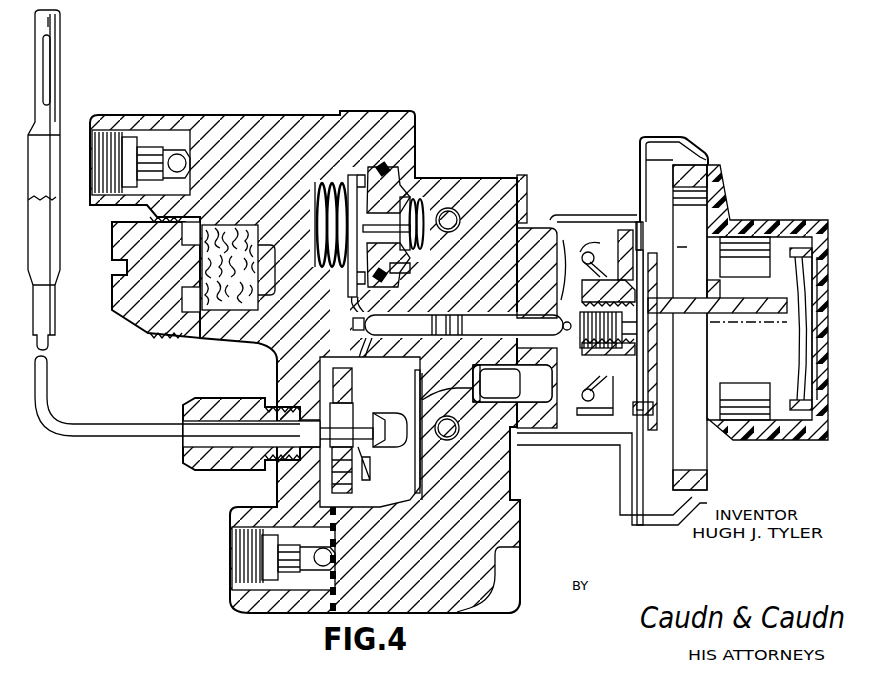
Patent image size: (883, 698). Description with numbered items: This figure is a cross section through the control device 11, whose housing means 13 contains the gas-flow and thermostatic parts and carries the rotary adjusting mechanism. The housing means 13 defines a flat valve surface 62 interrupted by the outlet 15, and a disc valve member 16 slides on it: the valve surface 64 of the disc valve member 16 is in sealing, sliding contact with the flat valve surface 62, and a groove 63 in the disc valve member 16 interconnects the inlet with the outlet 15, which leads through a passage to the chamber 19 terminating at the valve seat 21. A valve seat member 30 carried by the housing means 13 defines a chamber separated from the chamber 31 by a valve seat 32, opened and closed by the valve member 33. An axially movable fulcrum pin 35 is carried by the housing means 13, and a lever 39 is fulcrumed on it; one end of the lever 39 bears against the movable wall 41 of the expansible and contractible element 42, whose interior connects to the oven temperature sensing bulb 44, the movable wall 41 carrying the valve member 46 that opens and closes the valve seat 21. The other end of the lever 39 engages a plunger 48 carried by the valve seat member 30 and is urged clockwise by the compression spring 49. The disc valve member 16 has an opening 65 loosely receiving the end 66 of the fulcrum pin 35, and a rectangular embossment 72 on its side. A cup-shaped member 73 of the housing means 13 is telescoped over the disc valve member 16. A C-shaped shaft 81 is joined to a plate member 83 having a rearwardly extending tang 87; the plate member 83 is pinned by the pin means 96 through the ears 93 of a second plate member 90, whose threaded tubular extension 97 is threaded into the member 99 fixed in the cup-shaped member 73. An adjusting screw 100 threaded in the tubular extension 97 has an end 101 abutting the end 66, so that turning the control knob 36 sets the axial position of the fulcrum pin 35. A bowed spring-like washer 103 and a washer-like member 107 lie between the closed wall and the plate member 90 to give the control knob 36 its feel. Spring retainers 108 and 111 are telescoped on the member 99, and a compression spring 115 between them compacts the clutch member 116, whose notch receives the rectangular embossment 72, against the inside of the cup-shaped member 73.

The control device 11 is at (428, 311).
The housing means 13 is at (517, 501).
The outlet 15 is at (513, 410).
The disc valve member 16 is at (557, 221).
The chamber 19 is at (350, 347).
The valve seat 21 is at (408, 487).
The valve seat member 30 is at (405, 203).
The chamber 31 is at (413, 263).
The valve seat 32 is at (424, 240).
The valve member 33 is at (455, 207).
The fulcrum pin 35 is at (423, 335).
The control knob 36 is at (790, 223).
The lever 39 is at (347, 302).
The movable wall 41 is at (365, 428).
The expansible and contractible element 42 is at (335, 378).
The oven temperature sensing bulb 44 is at (50, 250).
The valve member 46 is at (404, 467).
The plunger 48 is at (386, 182).
The compression spring 49 is at (322, 215).
The flat valve surface 62 is at (527, 223).
The groove 63 is at (572, 433).
The valve surface 64 is at (518, 258).
The opening 65 is at (546, 270).
The end of fulcrum pin 66 is at (512, 383).
The rectangular embossment 72 is at (563, 285).
The cup-shaped member 73 is at (595, 447).
The C-shaped shaft 81 is at (769, 305).
The plate member 83 is at (657, 385).
The rearwardly extending tang 87 is at (653, 410).
The plate member 90 is at (643, 372).
The ears 93 is at (657, 276).
The pin means 96 is at (660, 326).
The tubular extension 97 is at (608, 293).
The member 99 is at (655, 288).
The adjusting screw 100 is at (608, 355).
The end of adjusting screw 101 is at (560, 327).
The bowed spring-like washer 103 is at (638, 250).
The washer-like member 107 is at (643, 398).
The spring retainer 108 is at (580, 262).
The spring retainer 111 is at (635, 420).
The compression spring 115 is at (594, 397).
The clutch member 116 is at (620, 440).